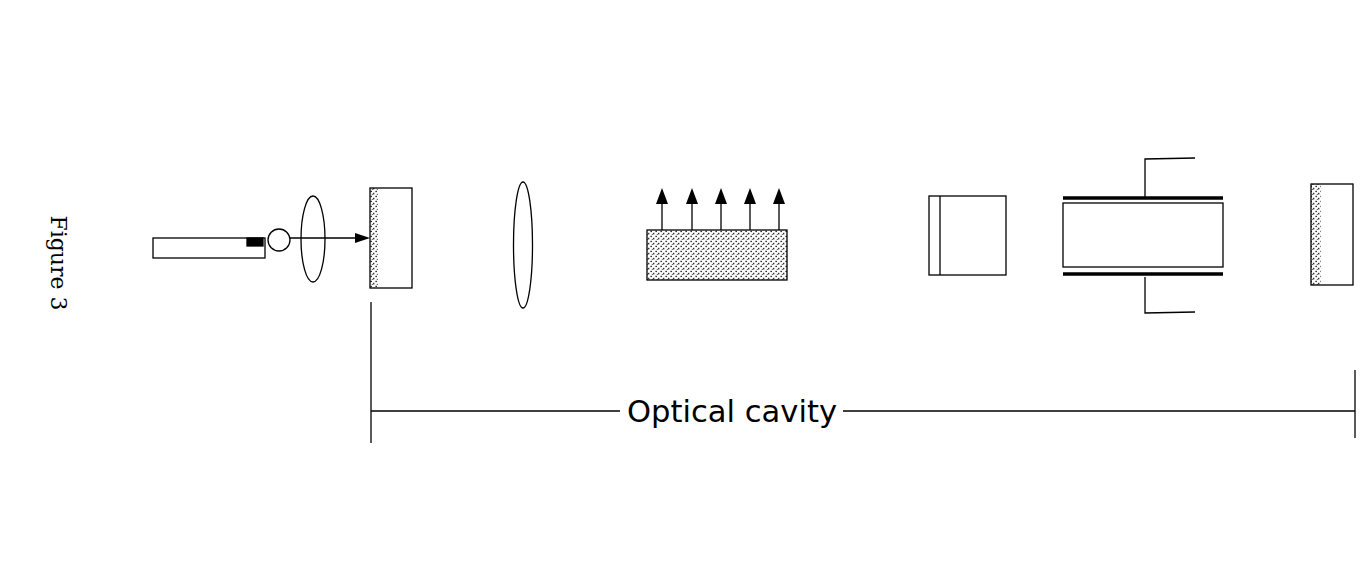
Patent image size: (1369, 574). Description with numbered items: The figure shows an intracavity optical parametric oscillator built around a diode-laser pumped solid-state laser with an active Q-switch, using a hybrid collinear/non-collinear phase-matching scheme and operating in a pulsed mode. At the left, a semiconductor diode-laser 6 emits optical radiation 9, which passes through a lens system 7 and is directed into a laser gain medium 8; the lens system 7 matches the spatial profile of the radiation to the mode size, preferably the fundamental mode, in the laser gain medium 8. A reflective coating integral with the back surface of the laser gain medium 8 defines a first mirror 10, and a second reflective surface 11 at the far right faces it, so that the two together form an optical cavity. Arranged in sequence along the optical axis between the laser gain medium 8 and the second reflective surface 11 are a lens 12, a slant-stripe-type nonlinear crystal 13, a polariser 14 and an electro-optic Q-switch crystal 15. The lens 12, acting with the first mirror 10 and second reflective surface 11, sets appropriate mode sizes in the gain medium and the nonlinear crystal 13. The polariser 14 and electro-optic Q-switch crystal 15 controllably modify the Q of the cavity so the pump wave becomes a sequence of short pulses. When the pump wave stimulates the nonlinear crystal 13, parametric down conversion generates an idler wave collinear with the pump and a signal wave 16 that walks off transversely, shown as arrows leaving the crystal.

The semiconductor diode-laser 6 is at (163, 242).
The lens system 7 is at (278, 227).
The laser gain medium 8 is at (390, 200).
The optical radiation 9 is at (332, 238).
The first mirror 10 is at (370, 267).
The second reflective surface 11 is at (1330, 192).
The lens 12 is at (522, 188).
The slant-stripe-type nonlinear crystal 13 is at (690, 185).
The polariser 14 is at (957, 210).
The electro-optic Q-switch crystal 15 is at (1088, 215).
The signal wave 16 is at (720, 190).